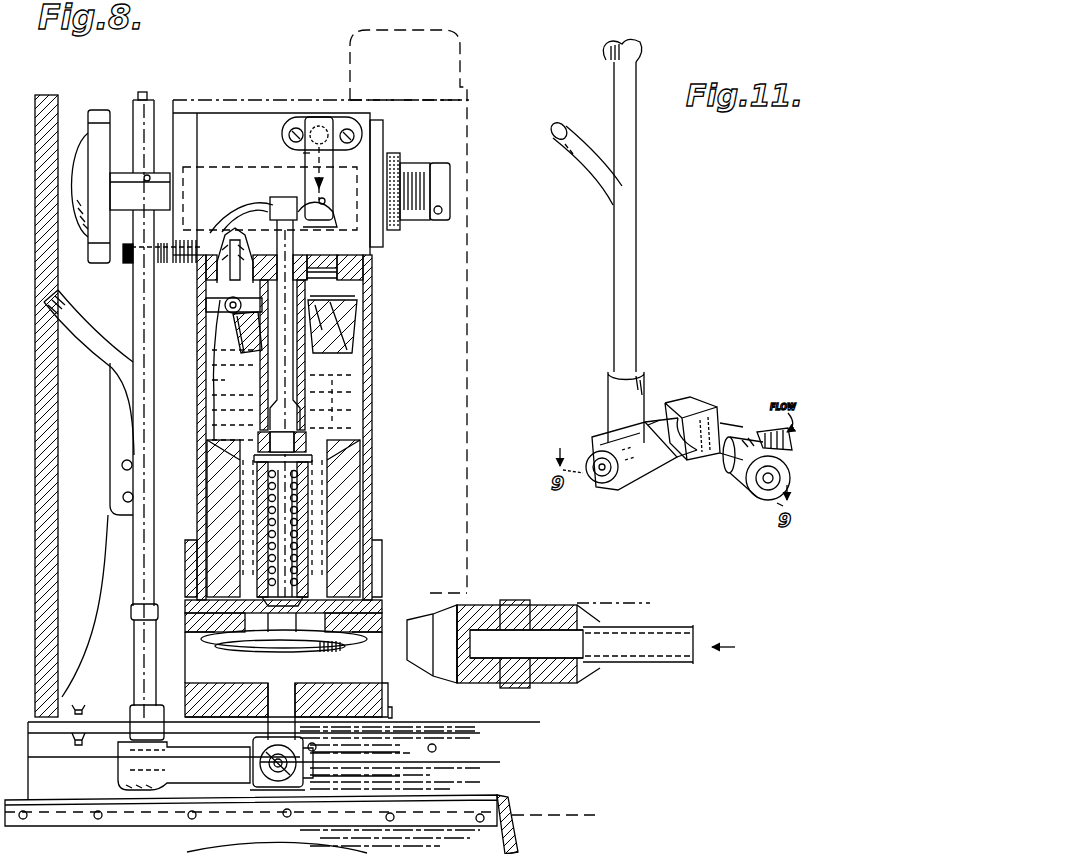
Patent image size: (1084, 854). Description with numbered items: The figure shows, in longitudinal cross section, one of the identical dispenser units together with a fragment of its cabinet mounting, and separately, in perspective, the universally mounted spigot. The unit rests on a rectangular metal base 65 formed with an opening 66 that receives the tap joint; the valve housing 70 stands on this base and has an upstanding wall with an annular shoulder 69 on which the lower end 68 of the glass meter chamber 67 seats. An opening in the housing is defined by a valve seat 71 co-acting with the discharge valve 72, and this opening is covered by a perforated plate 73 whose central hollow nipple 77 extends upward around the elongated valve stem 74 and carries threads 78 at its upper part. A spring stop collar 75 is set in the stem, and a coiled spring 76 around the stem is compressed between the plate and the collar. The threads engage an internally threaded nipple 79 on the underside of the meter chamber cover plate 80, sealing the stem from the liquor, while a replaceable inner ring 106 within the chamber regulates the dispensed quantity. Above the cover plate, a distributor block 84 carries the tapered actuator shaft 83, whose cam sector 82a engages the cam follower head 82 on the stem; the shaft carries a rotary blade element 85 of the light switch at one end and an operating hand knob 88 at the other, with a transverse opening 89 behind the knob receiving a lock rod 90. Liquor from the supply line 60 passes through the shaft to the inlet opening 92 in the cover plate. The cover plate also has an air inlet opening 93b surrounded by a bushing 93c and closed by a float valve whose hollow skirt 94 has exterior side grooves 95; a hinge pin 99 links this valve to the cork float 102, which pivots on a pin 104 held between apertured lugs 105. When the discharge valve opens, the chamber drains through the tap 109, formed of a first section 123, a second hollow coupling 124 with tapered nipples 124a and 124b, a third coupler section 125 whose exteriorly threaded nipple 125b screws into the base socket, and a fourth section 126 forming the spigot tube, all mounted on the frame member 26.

In FIG. 8, the frame member 26 is at (518, 850).
In FIG. 8, the supply line 60 is at (303, 153).
In FIG. 8, the base 65 is at (394, 712).
In FIG. 8, the opening 66 is at (262, 712).
In FIG. 8, the glass meter chamber 67 is at (374, 520).
In FIG. 8, the lower end 68 is at (352, 593).
In FIG. 8, the annular shoulder 69 is at (480, 604).
In FIG. 8, the valve housing 70 is at (386, 688).
In FIG. 8, the valve seat 71 is at (365, 666).
In FIG. 8, the discharge valve 72 is at (290, 656).
In FIG. 8, the perforated plate 73 is at (340, 590).
In FIG. 8, the valve stem 74 is at (306, 445).
In FIG. 8, the spring stop collar 75 is at (300, 452).
In FIG. 8, the coiled spring 76 is at (300, 526).
In FIG. 8, the hollow nipple 77 is at (315, 485).
In FIG. 8, the threads 78 is at (300, 415).
In FIG. 8, the internally threaded nipple 79 is at (302, 380).
In FIG. 8, the meter chamber cover plate 80 is at (360, 274).
In FIG. 8, the cam follower head 82 is at (305, 216).
In FIG. 8, the cam sector 82a is at (274, 205).
In FIG. 8, the tapered actuator shaft 83 is at (208, 166).
In FIG. 8, the distributor block 84 is at (273, 130).
In FIG. 8, the rotary blade element 85 is at (400, 154).
In FIG. 8, the operating hand knob 88 is at (98, 112).
In FIG. 8, the transverse opening 89 is at (128, 192).
In FIG. 8, the lock rod 90 is at (100, 246).
In FIG. 8, the inlet opening 92 is at (322, 281).
In FIG. 8, the air inlet opening 93b is at (248, 218).
In FIG. 8, the bushing 93c is at (215, 276).
In FIG. 8, the hollow skirt 94 is at (235, 318).
In FIG. 8, the exterior side grooves 95 is at (214, 384).
In FIG. 8, the hinge pin 99 is at (222, 330).
In FIG. 8, the float 102 is at (350, 315).
In FIG. 8, the pin 104 is at (232, 322).
In FIG. 8, the apertured lugs 105 is at (224, 307).
In FIG. 8, the inner ring 106 is at (345, 500).
In FIG. 8, the tap 109 is at (95, 332).
In FIG. 11, the tap 109 is at (700, 234).
In FIG. 8, the first section 123 is at (306, 782).
In FIG. 11, the first section 123 is at (733, 488).
In FIG. 11, the second hollow coupling 124 is at (703, 407).
In FIG. 11, the hollow tapered nipple 124a is at (783, 405).
In FIG. 11, the hollow tapered nipple 124b is at (677, 460).
In FIG. 8, the third coupler section 125 is at (168, 787).
In FIG. 11, the third coupler section 125 is at (652, 445).
In FIG. 8, the exteriorly threaded nipple 125b is at (290, 775).
In FIG. 8, the fourth section 126 is at (131, 568).
In FIG. 11, the fourth section 126 is at (636, 292).